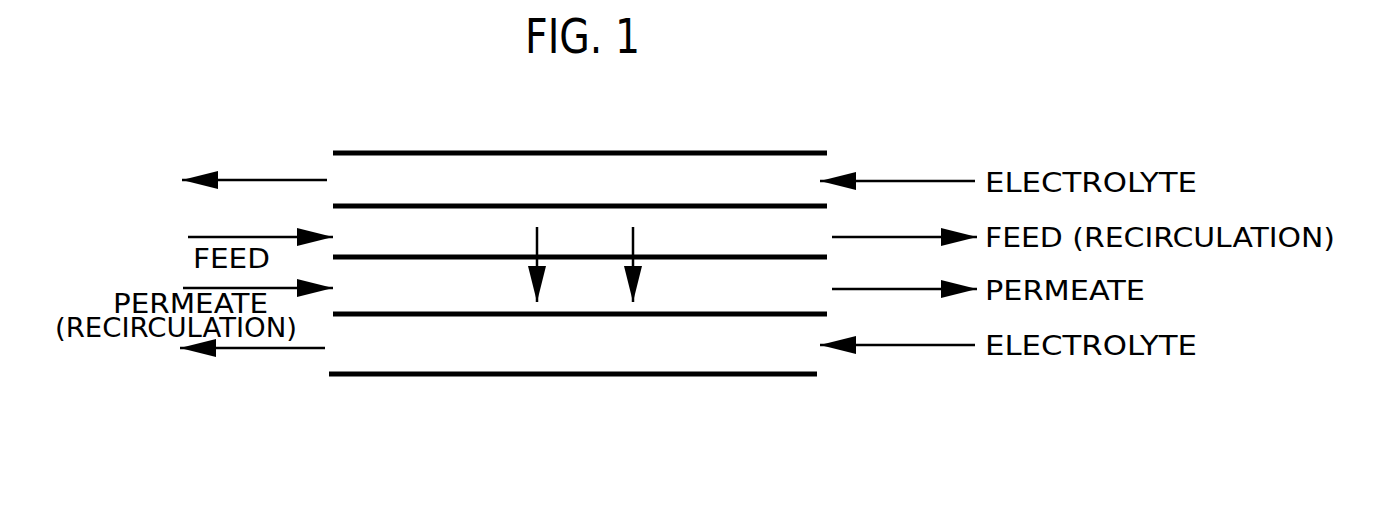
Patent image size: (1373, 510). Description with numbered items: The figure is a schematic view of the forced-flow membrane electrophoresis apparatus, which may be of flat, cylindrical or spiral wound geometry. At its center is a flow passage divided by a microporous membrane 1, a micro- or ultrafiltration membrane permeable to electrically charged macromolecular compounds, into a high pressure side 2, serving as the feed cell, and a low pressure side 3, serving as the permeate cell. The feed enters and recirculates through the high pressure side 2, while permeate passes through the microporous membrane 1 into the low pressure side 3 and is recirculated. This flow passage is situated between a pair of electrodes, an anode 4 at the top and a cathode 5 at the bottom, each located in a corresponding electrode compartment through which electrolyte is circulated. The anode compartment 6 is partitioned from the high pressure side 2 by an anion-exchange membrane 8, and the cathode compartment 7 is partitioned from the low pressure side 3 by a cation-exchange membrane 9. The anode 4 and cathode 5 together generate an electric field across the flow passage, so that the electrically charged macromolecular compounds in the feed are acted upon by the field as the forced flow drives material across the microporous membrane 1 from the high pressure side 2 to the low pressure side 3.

The microporous membrane 1 is at (590, 257).
The high pressure side (feed cell) 2 is at (582, 262).
The low pressure side (permeate cell) 3 is at (580, 292).
The anode 4 is at (580, 135).
The cathode 5 is at (573, 391).
The anode compartment 6 is at (578, 183).
The cathode compartment 7 is at (577, 348).
The anion-exchange membrane 8 is at (591, 212).
The cation-exchange membrane 9 is at (591, 322).